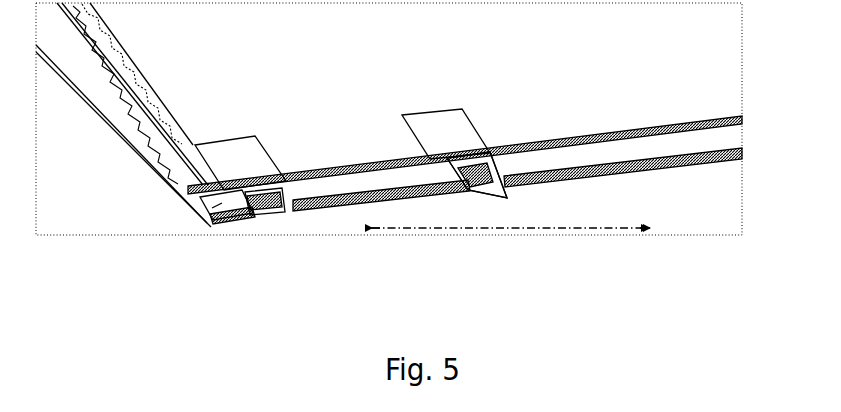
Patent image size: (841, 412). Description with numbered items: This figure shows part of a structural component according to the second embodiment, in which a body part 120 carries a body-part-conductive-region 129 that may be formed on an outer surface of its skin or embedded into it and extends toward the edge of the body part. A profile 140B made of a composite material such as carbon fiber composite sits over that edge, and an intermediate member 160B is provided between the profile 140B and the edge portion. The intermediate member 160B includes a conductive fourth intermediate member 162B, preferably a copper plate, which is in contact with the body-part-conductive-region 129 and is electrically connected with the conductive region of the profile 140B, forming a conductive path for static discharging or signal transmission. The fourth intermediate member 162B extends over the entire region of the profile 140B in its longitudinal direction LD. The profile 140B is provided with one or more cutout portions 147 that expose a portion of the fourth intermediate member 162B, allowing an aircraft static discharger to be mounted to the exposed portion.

The body part 120 is at (345, 87).
The body-part-conductive-region 129 is at (179, 140).
The profile 140B is at (203, 221).
The cutout portion 147 is at (270, 214).
The fourth intermediate member 162B is at (480, 180).
The intermediate member 160B is at (477, 175).
The longitudinal direction LD is at (510, 258).